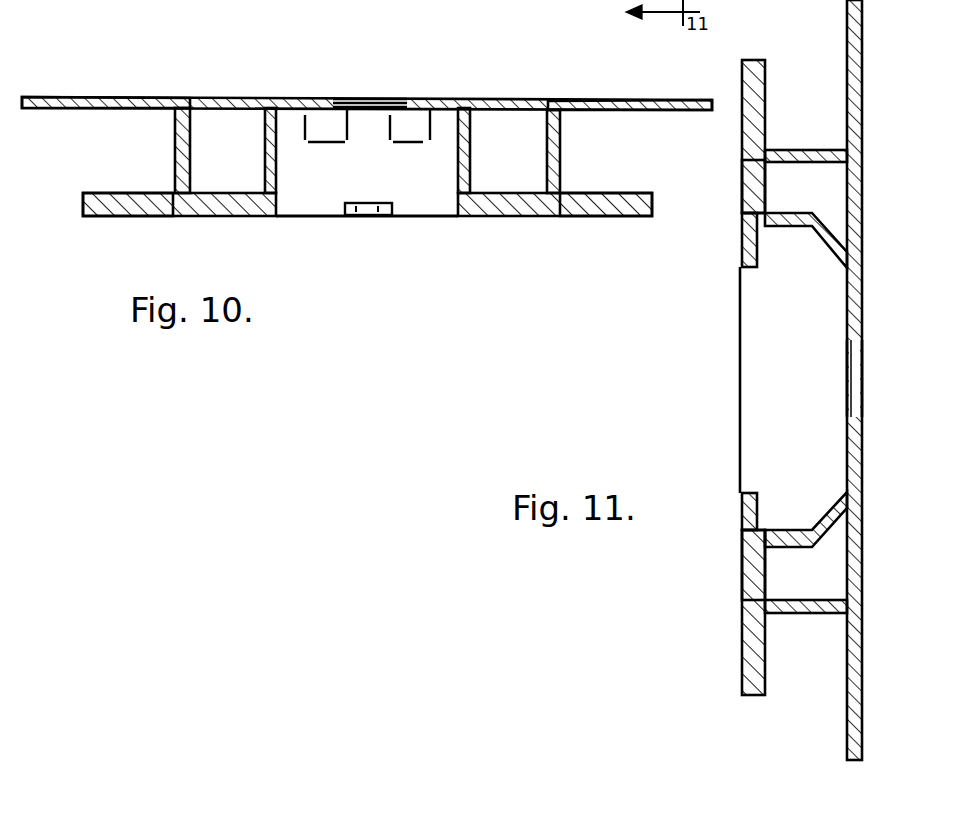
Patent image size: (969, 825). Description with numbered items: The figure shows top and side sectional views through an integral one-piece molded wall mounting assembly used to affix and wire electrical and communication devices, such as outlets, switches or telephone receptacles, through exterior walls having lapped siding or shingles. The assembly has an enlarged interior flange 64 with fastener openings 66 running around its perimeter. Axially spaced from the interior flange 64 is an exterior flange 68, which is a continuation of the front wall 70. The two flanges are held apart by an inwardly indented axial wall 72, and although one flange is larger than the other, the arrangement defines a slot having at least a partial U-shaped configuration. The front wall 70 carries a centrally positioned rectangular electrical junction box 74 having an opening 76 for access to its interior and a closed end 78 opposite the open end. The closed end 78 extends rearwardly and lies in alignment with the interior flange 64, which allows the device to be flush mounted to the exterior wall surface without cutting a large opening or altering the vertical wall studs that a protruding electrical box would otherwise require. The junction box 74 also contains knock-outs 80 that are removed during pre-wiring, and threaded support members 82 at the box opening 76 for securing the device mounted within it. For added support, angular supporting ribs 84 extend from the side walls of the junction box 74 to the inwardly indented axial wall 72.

In FIG. 10, the interior flange 64 is at (150, 72).
In FIG. 10, the fastener openings 66 is at (58, 97).
In FIG. 11, the fastener openings 66 is at (847, 30).
In FIG. 10, the exterior flange 68 is at (98, 216).
In FIG. 11, the exterior flange 68 is at (755, 60).
In FIG. 10, the front wall 70 is at (197, 216).
In FIG. 11, the front wall 70 is at (742, 172).
In FIG. 10, the inwardly indented axial wall 72 is at (175, 150).
In FIG. 11, the inwardly indented axial wall 72 is at (824, 150).
In FIG. 10, the electrical junction box 74 is at (262, 146).
In FIG. 11, the electrical junction box 74 is at (782, 326).
In FIG. 10, the opening 76 is at (305, 208).
In FIG. 11, the opening 76 is at (762, 408).
In FIG. 10, the closed end 78 is at (426, 98).
In FIG. 11, the closed end 78 is at (862, 320).
In FIG. 10, the knock-outs 80 is at (392, 130).
In FIG. 11, the knock-outs 80 is at (827, 243).
In FIG. 10, the threaded support members 82 is at (352, 218).
In FIG. 11, the threaded support members 82 is at (742, 250).
In FIG. 11, the angular supporting ribs 84 is at (843, 196).
In FIG. 10, the angular supporting ribs 84 is at (208, 118).